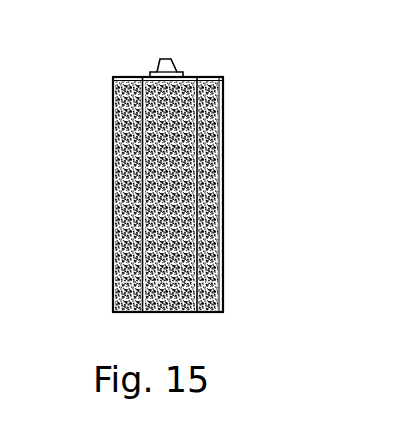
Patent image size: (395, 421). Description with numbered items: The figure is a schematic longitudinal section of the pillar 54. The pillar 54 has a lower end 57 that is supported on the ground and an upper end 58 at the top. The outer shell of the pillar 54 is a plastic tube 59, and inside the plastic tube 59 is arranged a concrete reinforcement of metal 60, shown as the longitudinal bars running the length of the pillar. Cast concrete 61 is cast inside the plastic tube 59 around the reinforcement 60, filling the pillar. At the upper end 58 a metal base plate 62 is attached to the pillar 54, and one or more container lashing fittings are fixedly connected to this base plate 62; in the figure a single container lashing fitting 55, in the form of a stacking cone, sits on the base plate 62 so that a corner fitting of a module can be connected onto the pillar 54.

The upper end 58 is at (110, 75).
The container lashing fitting 55 is at (174, 64).
The metal base plate 62 is at (137, 76).
The pillar 54 is at (113, 126).
The plastic tube 59 is at (113, 189).
The concrete reinforcement of metal 60 is at (142, 174).
The cast concrete 61 is at (177, 250).
The lower end 57 is at (95, 306).